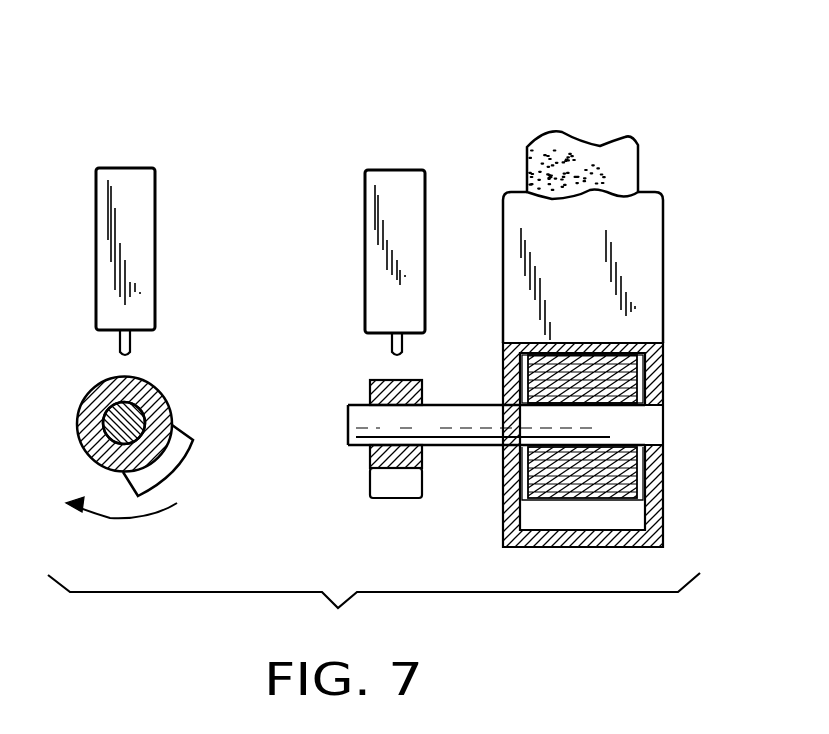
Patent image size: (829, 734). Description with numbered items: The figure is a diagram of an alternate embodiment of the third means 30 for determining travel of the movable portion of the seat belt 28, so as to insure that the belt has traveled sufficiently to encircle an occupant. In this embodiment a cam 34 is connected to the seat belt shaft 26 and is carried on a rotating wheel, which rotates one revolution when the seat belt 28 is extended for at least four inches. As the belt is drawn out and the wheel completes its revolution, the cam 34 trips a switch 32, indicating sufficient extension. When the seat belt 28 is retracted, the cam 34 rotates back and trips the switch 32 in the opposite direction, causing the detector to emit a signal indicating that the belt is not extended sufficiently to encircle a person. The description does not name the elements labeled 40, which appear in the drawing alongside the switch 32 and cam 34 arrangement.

The seat belt shaft 26 is at (623, 418).
The seat belt 28 is at (623, 158).
The third means for determining travel 30 is at (457, 115).
The switch 32 is at (140, 350).
The cam 34 is at (370, 484).
The electromagnets 40 is at (188, 152).